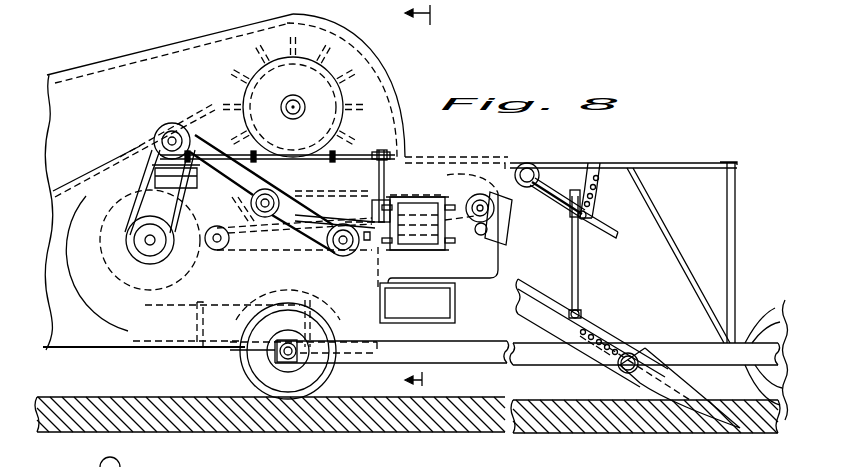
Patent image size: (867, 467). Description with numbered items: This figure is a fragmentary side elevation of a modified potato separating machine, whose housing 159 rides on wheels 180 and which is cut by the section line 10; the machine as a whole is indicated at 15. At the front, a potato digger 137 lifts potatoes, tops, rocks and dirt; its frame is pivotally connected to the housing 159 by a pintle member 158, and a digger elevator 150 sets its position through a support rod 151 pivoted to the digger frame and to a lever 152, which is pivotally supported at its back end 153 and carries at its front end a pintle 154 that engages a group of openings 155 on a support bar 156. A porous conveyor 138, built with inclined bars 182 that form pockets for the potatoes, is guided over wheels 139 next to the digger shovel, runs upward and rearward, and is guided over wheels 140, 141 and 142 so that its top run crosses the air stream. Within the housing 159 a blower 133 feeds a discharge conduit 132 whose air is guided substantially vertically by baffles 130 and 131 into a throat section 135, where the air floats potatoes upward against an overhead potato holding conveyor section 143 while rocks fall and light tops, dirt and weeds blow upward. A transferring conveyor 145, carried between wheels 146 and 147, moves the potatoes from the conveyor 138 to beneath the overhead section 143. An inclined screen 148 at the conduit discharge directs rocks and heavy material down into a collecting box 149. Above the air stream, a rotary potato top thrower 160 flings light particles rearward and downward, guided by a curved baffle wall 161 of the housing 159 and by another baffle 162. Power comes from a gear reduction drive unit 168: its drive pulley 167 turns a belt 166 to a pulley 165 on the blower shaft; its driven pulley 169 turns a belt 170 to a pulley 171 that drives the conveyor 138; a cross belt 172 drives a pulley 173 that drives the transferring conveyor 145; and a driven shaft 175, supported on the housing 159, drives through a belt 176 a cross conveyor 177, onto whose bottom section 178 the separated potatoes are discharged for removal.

The section line 10 is at (430, 198).
The harvester 15 is at (137, 462).
The baffle 130 is at (380, 262).
The baffle 131 is at (340, 273).
The discharge conduit 132 is at (380, 328).
The blower 133 is at (67, 240).
The throat section 135 is at (367, 240).
The potato digger 137 is at (680, 413).
The conveyor 138 is at (517, 207).
The wheels 139 is at (622, 377).
The wheel 140 is at (482, 186).
The wheel 141 is at (292, 188).
The wheel 142 is at (481, 235).
The overhead potato holding conveyor section 143 is at (367, 223).
The transferring conveyor 145 is at (277, 252).
The wheel 146 is at (217, 250).
The wheel 147 is at (335, 222).
The inclined screen 148 is at (367, 298).
The collecting box 149 is at (440, 314).
The digger elevator 150 is at (582, 263).
The support rod 151 is at (579, 280).
The lever 152 is at (558, 188).
The back end 153 is at (541, 165).
The pintle 154 is at (596, 208).
The openings 155 is at (601, 173).
The support bar 156 is at (598, 166).
The pintle member 158 is at (501, 193).
The housing 159 is at (358, 62).
The rotary potato top thrower 160 is at (374, 78).
The curved baffle wall 161 is at (364, 44).
The baffle 162 is at (135, 143).
The pulley 165 is at (160, 259).
The belt 166 is at (138, 183).
The drive pulley 167 is at (164, 125).
The gear reduction drive unit 168 is at (188, 125).
The driven pulley 169 is at (200, 134).
The belt 170 is at (258, 162).
The pulley 171 is at (254, 193).
The cross belt 172 is at (318, 240).
The pulley 173 is at (342, 248).
The driven shaft 175 is at (368, 152).
The belt 176 is at (386, 181).
The cross conveyor 177 is at (437, 198).
The bottom section 178 is at (428, 250).
The wheels 180 is at (250, 375).
The inclined bars 182 is at (614, 342).